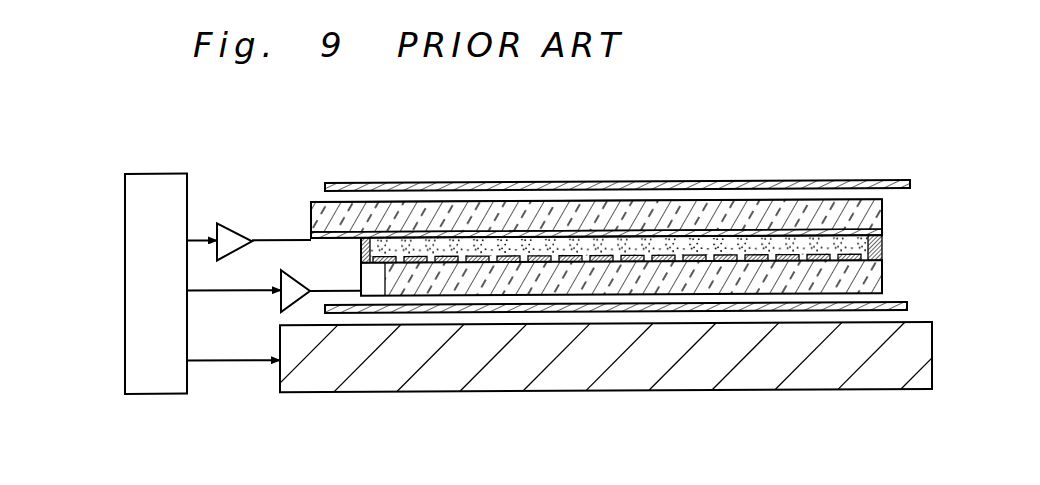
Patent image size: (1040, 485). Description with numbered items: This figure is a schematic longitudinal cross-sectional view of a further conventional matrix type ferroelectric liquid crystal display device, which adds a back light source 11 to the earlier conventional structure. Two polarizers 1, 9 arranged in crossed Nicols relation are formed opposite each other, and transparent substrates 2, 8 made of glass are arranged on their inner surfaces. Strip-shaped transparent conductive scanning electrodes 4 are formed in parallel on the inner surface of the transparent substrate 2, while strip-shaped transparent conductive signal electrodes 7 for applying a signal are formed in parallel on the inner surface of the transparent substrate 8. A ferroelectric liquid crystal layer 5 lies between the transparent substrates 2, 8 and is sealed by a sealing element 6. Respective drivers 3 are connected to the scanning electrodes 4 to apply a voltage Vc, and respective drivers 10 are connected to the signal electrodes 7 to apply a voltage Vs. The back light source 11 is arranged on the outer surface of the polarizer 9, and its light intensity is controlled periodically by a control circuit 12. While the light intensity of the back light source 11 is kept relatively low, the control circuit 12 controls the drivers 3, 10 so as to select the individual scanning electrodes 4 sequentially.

The polarizer 1 is at (910, 182).
The transparent substrate 2 is at (659, 193).
The driver 3 is at (237, 237).
The scanning electrode 4 is at (313, 241).
The ferroelectric liquid crystal layer 5 is at (872, 218).
The sealing element 6 is at (361, 250).
The signal electrode 7 is at (388, 252).
The transparent substrate 8 is at (614, 280).
The polarizer 9 is at (907, 307).
The driver 10 is at (281, 310).
The back light source 11 is at (630, 372).
The control circuit 12 is at (155, 173).